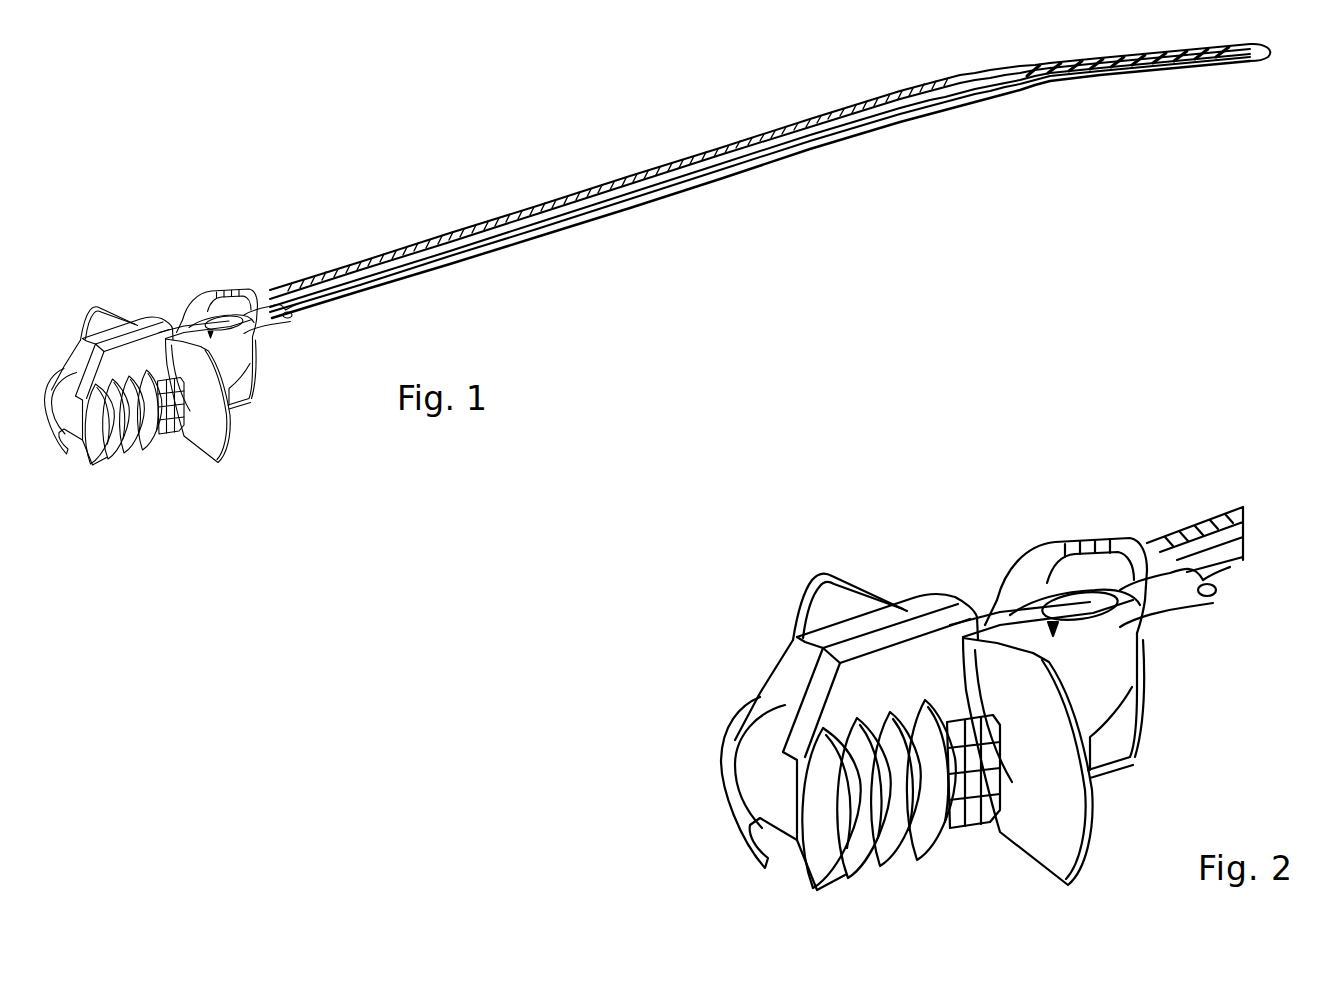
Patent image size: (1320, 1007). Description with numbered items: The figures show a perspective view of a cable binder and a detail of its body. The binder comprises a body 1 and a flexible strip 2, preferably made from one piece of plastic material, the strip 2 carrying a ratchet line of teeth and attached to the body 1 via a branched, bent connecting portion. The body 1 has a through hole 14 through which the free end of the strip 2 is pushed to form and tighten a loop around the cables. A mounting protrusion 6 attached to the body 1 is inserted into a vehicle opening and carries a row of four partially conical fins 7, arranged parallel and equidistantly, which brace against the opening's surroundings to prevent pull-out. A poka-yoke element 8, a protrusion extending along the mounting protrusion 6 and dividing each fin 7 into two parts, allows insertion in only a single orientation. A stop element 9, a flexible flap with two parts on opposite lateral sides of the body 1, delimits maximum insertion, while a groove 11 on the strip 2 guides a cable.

In FIG. 1, the body 1 is at (243, 400).
In FIG. 2, the body 1 is at (1115, 740).
In FIG. 2, the flexible strip 2 is at (1207, 525).
In FIG. 1, the mounting protrusion 6 is at (171, 430).
In FIG. 2, the mounting protrusion 6 is at (748, 563).
In FIG. 1, the fins 7 is at (110, 438).
In FIG. 2, the fins 7 is at (820, 808).
In FIG. 1, the poka-yoke element 8 is at (113, 300).
In FIG. 2, the poka-yoke element 8 is at (900, 560).
In FIG. 1, the stop element 9 is at (205, 428).
In FIG. 2, the stop element 9 is at (1060, 786).
In FIG. 1, the groove 11 is at (283, 322).
In FIG. 2, the groove 11 is at (1198, 608).
In FIG. 1, the through hole 14 is at (200, 300).
In FIG. 2, the through hole 14 is at (1075, 560).